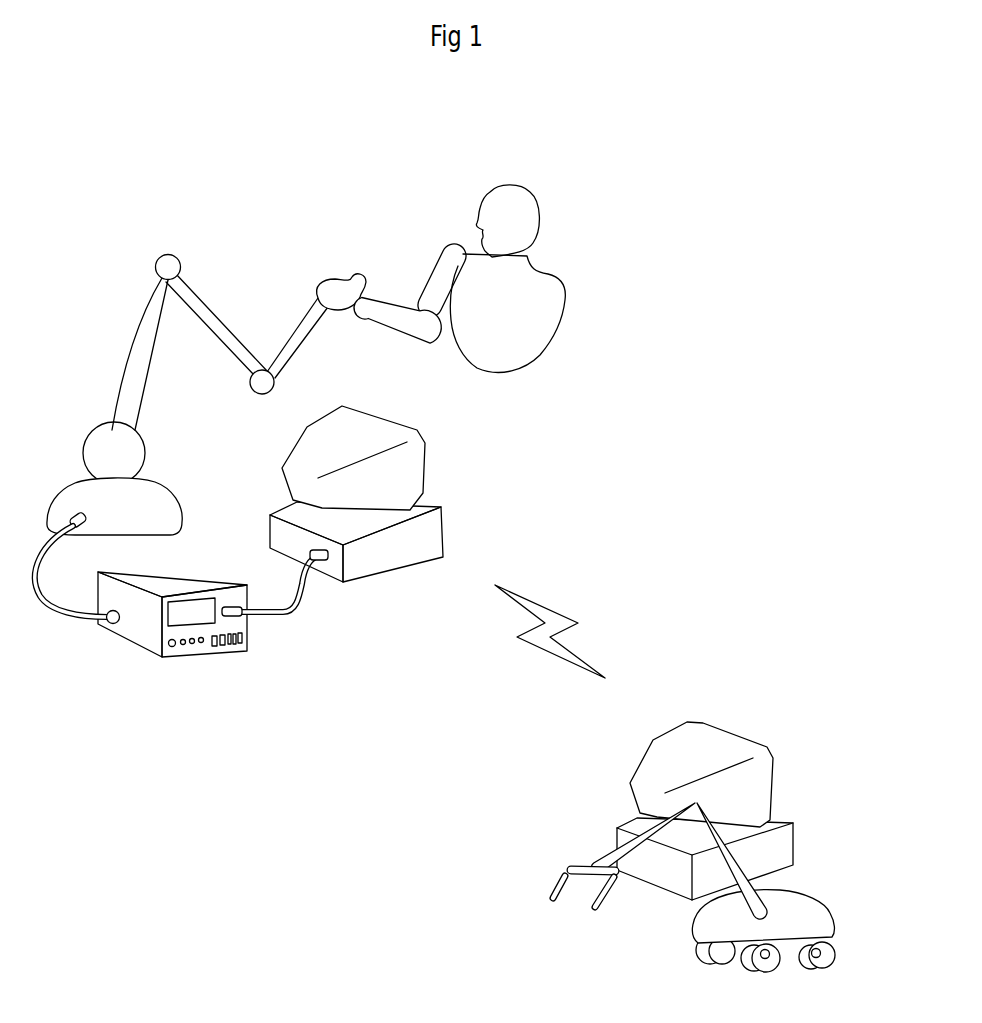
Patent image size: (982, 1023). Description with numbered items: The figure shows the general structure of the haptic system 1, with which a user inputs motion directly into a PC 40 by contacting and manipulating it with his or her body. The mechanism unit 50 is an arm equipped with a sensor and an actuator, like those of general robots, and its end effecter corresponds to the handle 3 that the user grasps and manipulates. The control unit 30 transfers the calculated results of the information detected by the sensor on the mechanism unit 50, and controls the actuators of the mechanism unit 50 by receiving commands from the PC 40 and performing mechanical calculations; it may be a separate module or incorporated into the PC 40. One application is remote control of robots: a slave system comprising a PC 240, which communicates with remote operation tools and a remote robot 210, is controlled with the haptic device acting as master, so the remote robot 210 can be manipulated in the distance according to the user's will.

The haptic system 1 is at (463, 535).
The handle 3 is at (435, 279).
The mechanism unit 50 is at (145, 318).
The control unit 30 is at (150, 581).
The PC 40 is at (427, 533).
The PC 240 is at (728, 755).
The remote robot 210 is at (790, 915).